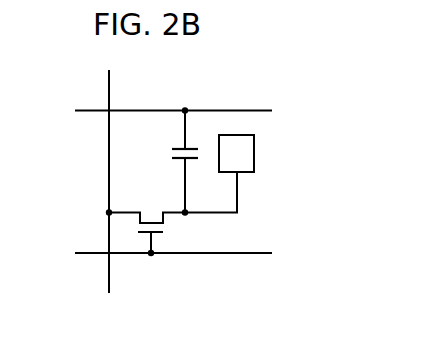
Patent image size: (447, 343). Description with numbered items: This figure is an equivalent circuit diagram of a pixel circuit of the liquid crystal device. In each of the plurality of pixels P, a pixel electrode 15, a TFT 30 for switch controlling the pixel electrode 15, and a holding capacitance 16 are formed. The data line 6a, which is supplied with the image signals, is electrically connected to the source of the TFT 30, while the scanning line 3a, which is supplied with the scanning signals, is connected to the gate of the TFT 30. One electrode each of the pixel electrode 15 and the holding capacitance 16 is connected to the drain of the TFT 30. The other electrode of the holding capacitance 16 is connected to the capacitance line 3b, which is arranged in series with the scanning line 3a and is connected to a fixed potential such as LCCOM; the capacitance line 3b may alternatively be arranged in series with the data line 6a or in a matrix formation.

The pixel P is at (289, 85).
The capacitance line 3b is at (233, 110).
The scanning line 3a is at (247, 255).
The data line 6a is at (108, 273).
The holding capacitance 16 is at (165, 148).
The pixel electrode 15 is at (247, 158).
The TFT 30 is at (136, 236).